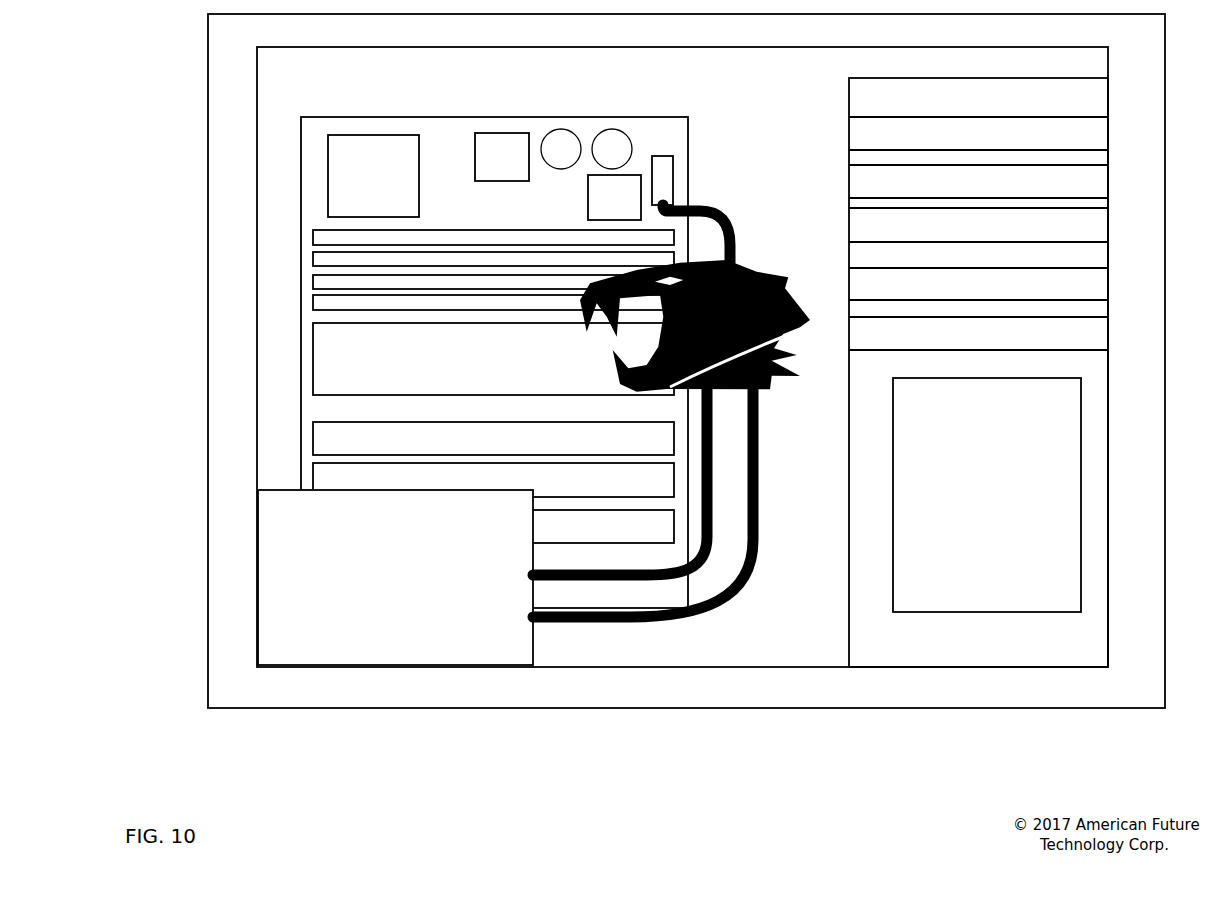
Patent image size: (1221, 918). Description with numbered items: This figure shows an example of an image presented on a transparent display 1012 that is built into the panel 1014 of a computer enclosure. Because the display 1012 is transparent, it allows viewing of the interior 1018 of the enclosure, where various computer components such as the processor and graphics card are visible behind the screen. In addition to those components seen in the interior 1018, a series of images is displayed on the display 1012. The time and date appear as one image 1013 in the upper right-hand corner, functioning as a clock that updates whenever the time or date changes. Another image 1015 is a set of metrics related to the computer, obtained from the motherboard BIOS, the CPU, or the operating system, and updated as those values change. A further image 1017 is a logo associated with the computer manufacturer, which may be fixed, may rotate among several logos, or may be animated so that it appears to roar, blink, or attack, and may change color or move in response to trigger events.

The transparent display 1012 is at (280, 392).
The time and date image 1013 is at (1095, 163).
The panel 1014 is at (226, 279).
The computer metrics image 1015 is at (1098, 637).
The logo image 1017 is at (803, 322).
The interior 1018 is at (283, 69).